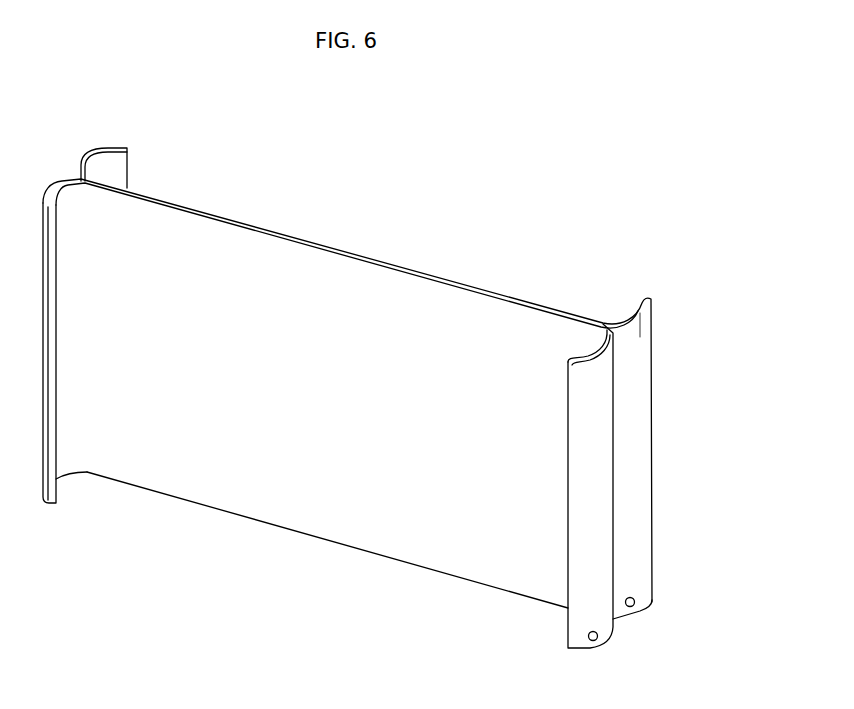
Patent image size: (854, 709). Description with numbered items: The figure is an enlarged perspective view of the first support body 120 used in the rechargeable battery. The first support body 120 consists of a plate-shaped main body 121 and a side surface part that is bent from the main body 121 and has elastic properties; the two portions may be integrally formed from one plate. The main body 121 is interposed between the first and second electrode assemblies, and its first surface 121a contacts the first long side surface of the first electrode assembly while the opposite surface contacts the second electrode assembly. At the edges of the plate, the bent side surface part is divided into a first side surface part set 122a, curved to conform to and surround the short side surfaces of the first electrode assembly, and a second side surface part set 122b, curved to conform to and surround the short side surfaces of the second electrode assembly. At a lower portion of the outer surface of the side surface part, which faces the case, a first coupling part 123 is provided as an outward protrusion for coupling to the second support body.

The first support body 120 is at (697, 261).
The main body 121 is at (322, 288).
The first surface 121a is at (340, 545).
The first side surface part set 122a is at (68, 457).
The second side surface part set 122b is at (110, 167).
The first coupling part 123 is at (636, 610).